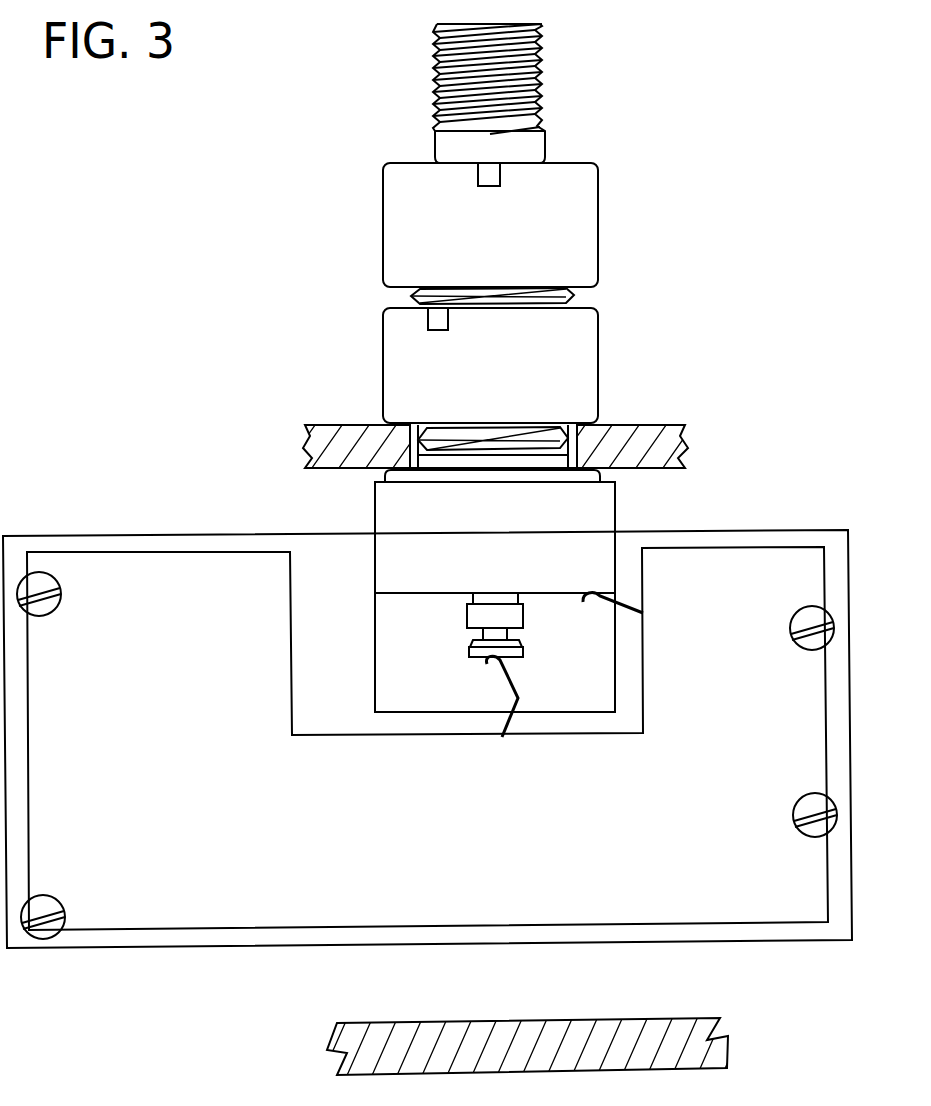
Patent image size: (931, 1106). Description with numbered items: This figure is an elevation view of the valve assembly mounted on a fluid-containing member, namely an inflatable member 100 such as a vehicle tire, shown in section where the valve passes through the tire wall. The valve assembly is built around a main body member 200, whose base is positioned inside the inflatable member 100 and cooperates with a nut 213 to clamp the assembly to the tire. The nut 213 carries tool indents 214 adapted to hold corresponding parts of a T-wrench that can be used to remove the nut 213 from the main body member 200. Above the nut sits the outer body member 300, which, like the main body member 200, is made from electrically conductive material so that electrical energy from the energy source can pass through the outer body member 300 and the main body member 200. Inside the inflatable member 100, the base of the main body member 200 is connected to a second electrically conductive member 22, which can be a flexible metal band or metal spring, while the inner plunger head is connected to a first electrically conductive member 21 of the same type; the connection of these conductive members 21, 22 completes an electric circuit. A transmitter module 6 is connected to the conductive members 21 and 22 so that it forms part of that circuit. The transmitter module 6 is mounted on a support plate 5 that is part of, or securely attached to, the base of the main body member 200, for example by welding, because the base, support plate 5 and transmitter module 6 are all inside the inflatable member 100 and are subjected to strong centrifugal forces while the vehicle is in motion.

The support plate 5 is at (731, 537).
The transmitter module 6 is at (768, 557).
The electrically conductive member 21 is at (522, 680).
The second electrically conductive member 22 is at (632, 603).
The inflatable member 100 is at (333, 432).
The main body member 200 is at (422, 297).
The nut 213 is at (415, 373).
The tool indents 214 is at (490, 177).
The outer body member 300 is at (398, 217).